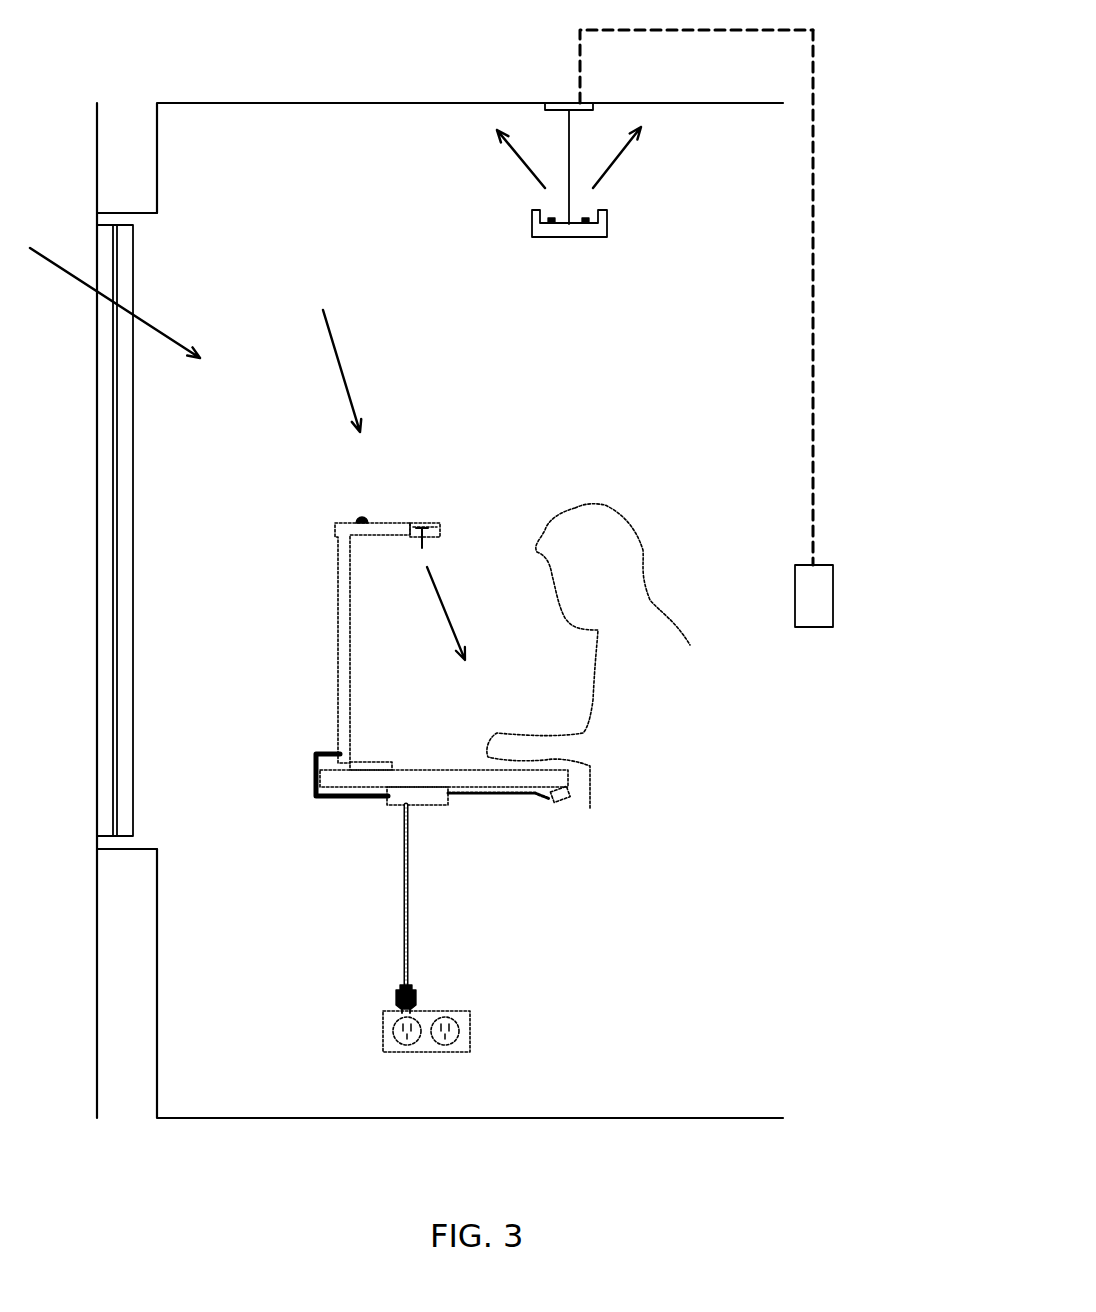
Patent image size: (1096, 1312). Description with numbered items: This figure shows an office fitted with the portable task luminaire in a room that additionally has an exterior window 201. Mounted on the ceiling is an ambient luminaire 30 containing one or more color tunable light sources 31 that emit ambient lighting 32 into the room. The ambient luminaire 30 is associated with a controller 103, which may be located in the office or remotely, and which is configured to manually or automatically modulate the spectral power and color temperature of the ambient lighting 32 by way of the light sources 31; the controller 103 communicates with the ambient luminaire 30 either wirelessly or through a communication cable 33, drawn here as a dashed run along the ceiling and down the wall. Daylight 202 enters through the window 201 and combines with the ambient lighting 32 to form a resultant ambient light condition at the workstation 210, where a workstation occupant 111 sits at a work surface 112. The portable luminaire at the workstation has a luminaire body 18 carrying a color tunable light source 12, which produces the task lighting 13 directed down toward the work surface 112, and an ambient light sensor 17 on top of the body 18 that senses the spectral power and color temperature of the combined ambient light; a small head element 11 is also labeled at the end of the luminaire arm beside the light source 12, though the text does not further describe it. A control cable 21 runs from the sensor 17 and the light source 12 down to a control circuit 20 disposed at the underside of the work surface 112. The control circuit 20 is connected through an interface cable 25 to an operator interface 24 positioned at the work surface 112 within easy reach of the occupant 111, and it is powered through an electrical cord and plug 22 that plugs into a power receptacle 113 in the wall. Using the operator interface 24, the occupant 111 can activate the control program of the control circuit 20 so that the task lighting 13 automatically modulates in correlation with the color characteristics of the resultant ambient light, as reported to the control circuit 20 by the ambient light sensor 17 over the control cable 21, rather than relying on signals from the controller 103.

The communication cable 33 is at (705, 30).
The ambient lighting 32 is at (507, 150).
The color tunable light source 31 is at (548, 222).
The ambient luminaire 30 is at (540, 240).
The daylight 202 is at (155, 327).
The workstation 210 is at (575, 416).
The exterior window 201 is at (118, 645).
The controller 103 is at (835, 600).
The workstation occupant 111 is at (572, 510).
The ambient light sensor 17 is at (362, 520).
The luminaire body 18 is at (437, 522).
The color tunable light source 12 is at (420, 540).
The lamp head housing 11 is at (430, 540).
The task lighting 13 is at (450, 643).
The work surface 112 is at (462, 770).
The control cable 21 is at (355, 797).
The control circuit 20 is at (437, 805).
The interface cable 25 is at (515, 795).
The operator interface 24 is at (567, 800).
The electrical cord and plug 22 is at (410, 950).
The power receptacle 113 is at (397, 1022).